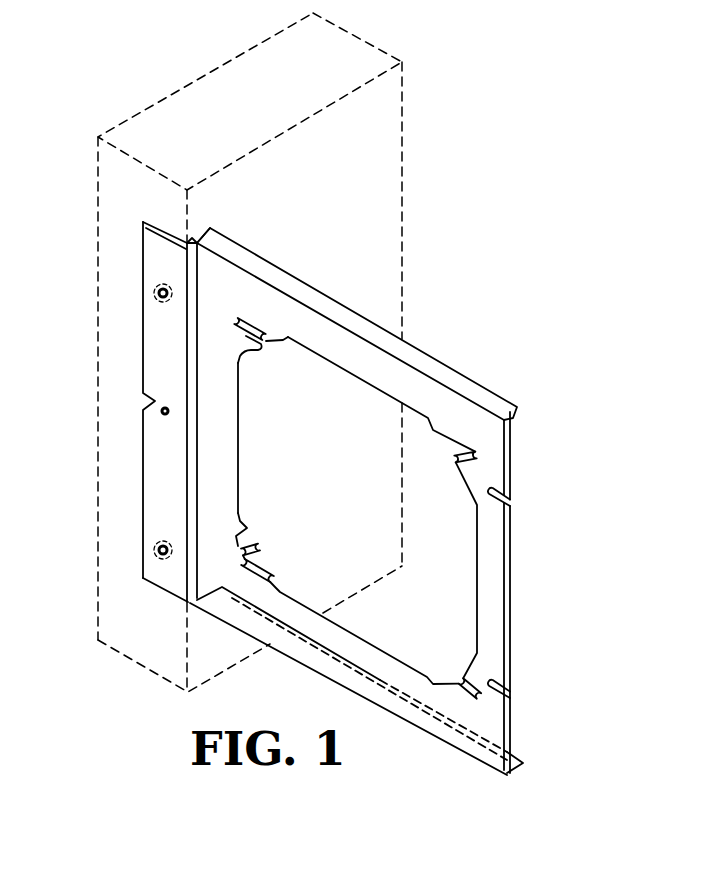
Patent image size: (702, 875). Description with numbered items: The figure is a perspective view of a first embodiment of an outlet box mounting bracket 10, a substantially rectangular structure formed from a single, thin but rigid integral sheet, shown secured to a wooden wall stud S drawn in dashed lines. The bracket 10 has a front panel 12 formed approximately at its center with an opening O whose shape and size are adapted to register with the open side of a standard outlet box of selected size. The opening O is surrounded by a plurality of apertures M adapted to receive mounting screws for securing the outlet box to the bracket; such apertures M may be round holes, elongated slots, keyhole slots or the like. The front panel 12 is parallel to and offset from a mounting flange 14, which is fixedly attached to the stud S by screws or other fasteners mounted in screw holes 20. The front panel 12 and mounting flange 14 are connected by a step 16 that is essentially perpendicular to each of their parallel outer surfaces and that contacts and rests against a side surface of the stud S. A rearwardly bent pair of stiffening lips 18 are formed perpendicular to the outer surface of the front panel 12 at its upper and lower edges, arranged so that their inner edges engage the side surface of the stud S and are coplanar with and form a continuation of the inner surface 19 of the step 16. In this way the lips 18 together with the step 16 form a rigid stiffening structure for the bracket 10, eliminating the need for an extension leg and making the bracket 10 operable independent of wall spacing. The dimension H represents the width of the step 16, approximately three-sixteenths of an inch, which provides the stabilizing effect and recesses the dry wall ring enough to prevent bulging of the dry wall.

The bracket 10 is at (406, 501).
The front panel 12 is at (405, 382).
The mounting flange 14 is at (116, 412).
The step 16 is at (193, 343).
The stiffening lips 18 is at (293, 282).
The inner surface 19 is at (188, 242).
The screw holes 20 is at (163, 299).
The stud S is at (93, 205).
The apertures M is at (276, 348).
The dimension H is at (213, 604).
The opening O is at (357, 511).